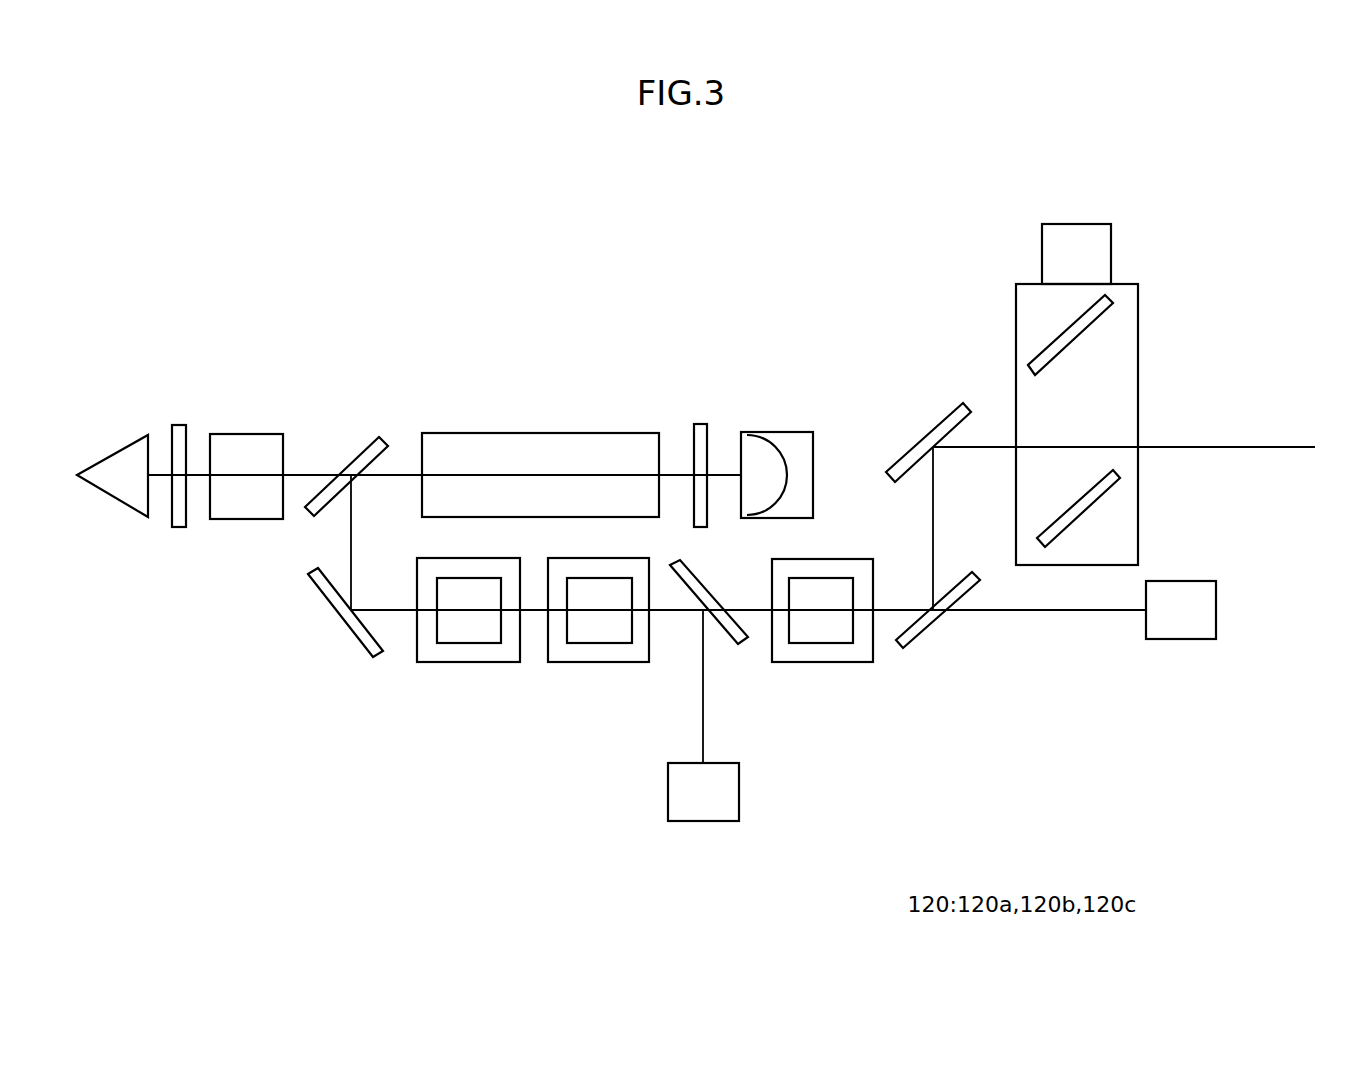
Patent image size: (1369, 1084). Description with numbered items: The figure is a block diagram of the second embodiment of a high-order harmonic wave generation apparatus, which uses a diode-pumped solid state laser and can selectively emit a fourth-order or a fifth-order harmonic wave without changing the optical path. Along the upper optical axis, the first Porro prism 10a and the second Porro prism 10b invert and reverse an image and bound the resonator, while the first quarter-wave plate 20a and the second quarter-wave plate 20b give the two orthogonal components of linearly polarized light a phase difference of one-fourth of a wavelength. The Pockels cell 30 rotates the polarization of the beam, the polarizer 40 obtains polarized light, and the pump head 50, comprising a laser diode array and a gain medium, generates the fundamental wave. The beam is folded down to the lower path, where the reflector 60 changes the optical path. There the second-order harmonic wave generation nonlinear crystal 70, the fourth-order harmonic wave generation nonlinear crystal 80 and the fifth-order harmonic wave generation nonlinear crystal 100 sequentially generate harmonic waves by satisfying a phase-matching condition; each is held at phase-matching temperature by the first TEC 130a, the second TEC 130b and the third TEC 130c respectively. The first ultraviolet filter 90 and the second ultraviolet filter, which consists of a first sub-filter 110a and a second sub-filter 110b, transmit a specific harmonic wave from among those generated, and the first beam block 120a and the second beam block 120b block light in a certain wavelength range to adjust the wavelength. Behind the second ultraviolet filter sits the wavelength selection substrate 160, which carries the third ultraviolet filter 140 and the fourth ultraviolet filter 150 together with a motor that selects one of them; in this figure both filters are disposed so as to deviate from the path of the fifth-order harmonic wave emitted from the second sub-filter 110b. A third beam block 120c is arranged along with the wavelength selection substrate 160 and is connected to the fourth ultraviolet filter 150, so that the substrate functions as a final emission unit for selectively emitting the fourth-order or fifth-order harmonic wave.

The first Porro prism 10a is at (112, 453).
The second Porro prism 10b is at (776, 432).
The first quarter-wave plate 20a is at (177, 423).
The second quarter-wave plate 20b is at (702, 423).
The Pockels cell 30 is at (248, 434).
The polarizer 40 is at (352, 453).
The pump head 50 is at (542, 433).
The reflector 60 is at (338, 625).
The second-order harmonic wave generation nonlinear crystal 70 is at (449, 643).
The fourth-order harmonic wave generation nonlinear crystal 80 is at (580, 645).
The first ultraviolet filter 90 is at (739, 647).
The fifth-order harmonic wave generation nonlinear crystal 100 is at (822, 643).
The 2-1-th ultraviolet filter 110a is at (933, 632).
The 2-2-th ultraviolet filter 110b is at (932, 423).
The first beam block 120a is at (705, 821).
The second beam block 120b is at (1216, 609).
The third beam block 120c is at (1076, 223).
The first TEC 130a is at (480, 662).
The second TEC 130b is at (610, 662).
The third TEC 130c is at (852, 662).
The third ultraviolet filter 140 is at (1087, 513).
The fourth ultraviolet filter 150 is at (1113, 303).
The wavelength selection substrate 160 is at (1138, 423).